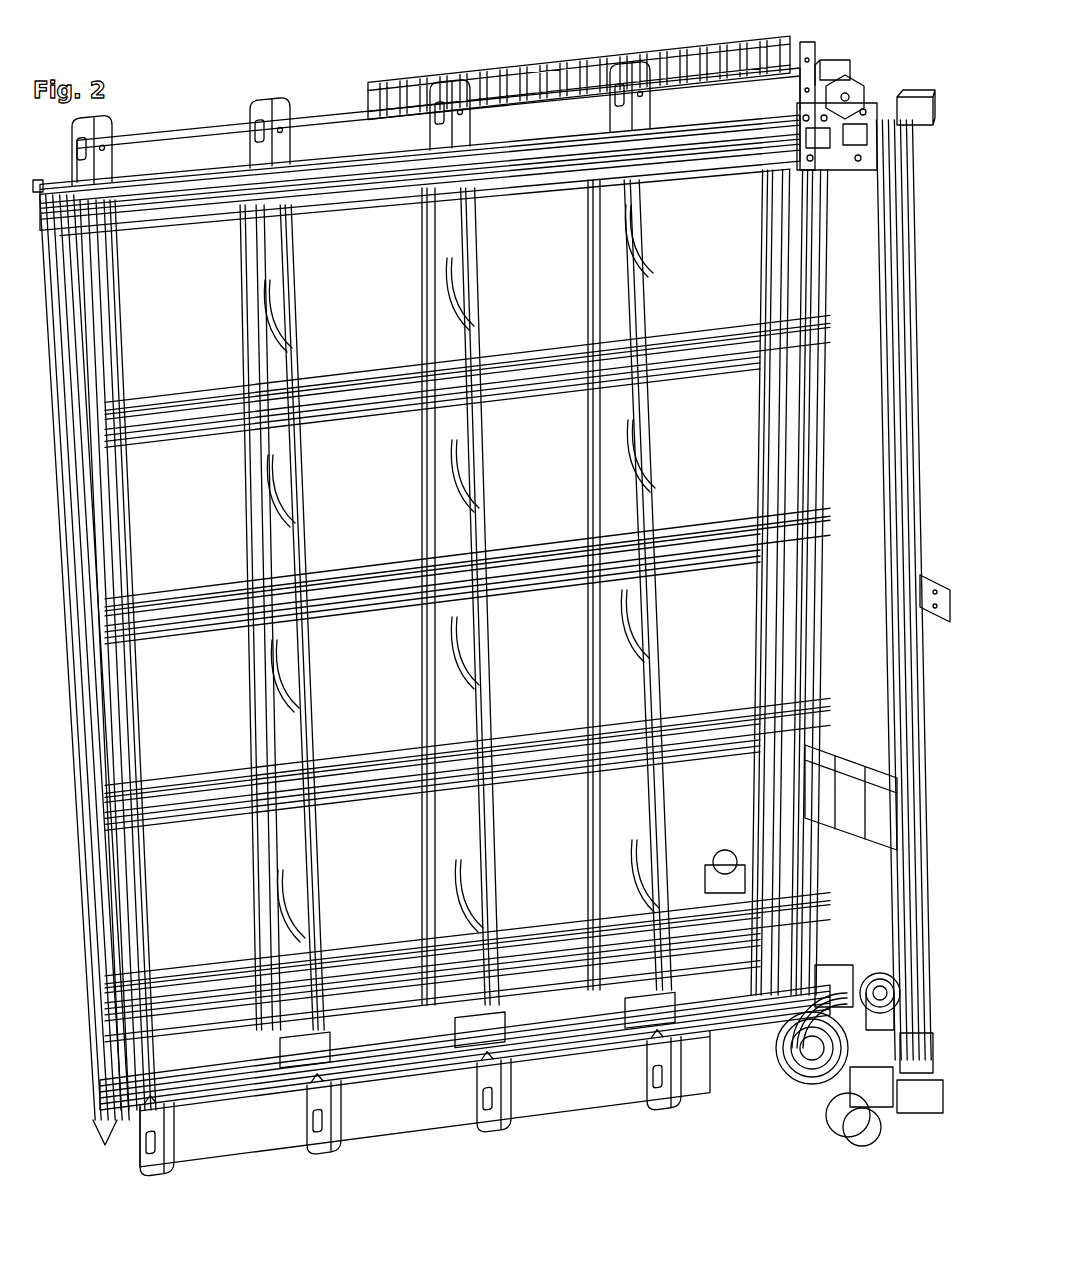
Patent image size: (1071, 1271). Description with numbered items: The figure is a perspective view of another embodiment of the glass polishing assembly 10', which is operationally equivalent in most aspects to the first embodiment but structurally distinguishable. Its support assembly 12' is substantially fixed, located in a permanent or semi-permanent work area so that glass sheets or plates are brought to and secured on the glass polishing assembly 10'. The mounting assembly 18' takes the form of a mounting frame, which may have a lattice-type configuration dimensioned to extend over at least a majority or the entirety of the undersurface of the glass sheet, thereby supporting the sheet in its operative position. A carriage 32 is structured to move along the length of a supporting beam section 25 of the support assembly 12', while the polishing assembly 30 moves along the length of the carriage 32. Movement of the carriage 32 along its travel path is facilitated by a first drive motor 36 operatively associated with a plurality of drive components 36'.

The glass polishing assembly 10' is at (465, 1083).
The support assembly 12' is at (420, 147).
The mounting assembly 18' is at (547, 592).
The beam section 25 is at (333, 214).
The polishing assembly 30 is at (904, 1146).
The carriage 32 is at (887, 266).
The first drive motor 36 is at (866, 105).
The drive components 36' is at (579, 77).